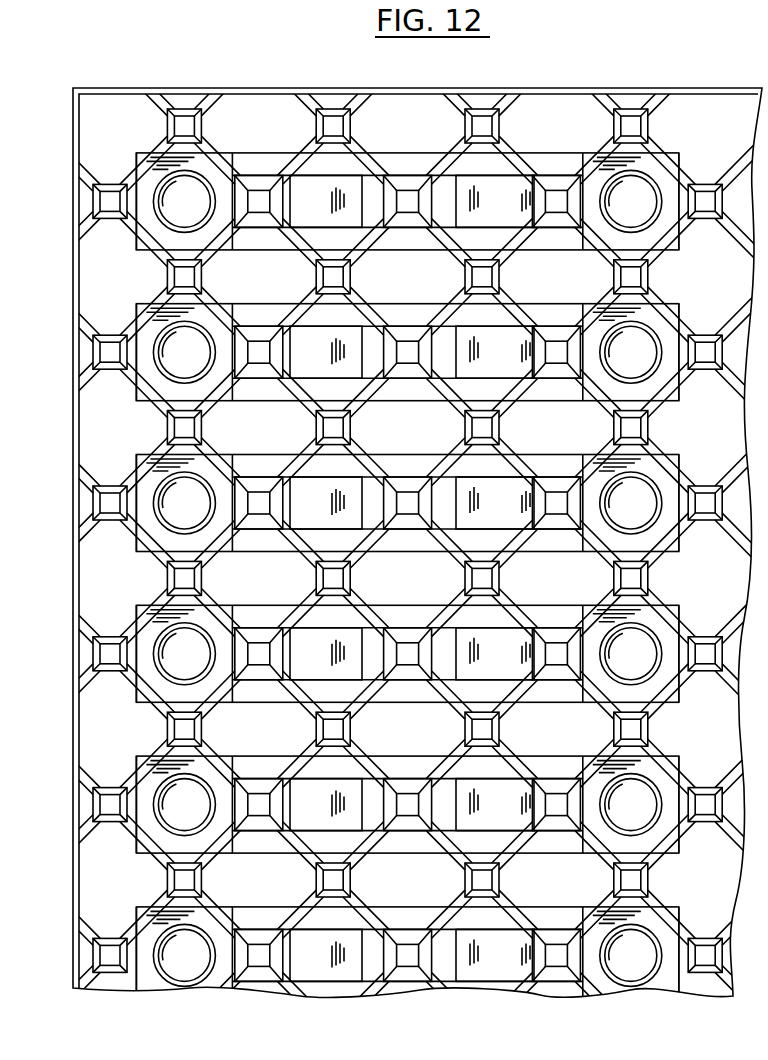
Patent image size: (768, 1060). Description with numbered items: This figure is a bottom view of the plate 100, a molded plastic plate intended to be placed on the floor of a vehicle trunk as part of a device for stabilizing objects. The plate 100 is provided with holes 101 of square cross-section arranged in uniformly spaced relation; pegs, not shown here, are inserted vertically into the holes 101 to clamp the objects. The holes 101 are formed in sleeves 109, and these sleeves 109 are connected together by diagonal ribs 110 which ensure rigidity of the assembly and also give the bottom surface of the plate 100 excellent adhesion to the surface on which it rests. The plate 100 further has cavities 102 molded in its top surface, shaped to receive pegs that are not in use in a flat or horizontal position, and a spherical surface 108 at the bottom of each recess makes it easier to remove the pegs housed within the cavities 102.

The plate 100 is at (98, 731).
The holes 101 is at (333, 440).
The cavities 102 is at (270, 390).
The spherical surface 108 is at (175, 519).
The sleeves 109 is at (351, 276).
The diagonal ribs 110 is at (307, 328).